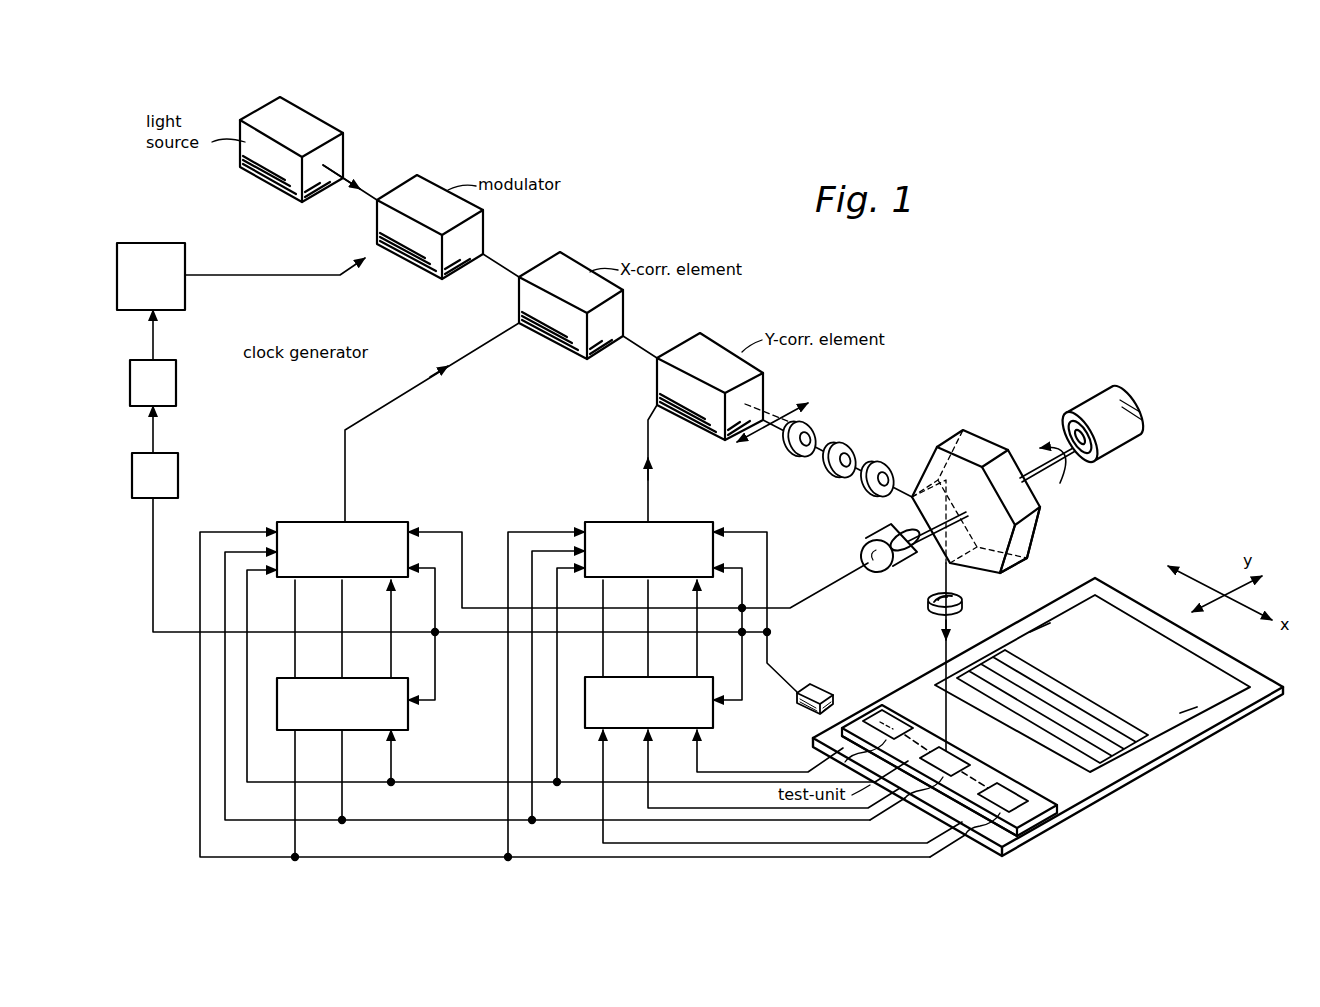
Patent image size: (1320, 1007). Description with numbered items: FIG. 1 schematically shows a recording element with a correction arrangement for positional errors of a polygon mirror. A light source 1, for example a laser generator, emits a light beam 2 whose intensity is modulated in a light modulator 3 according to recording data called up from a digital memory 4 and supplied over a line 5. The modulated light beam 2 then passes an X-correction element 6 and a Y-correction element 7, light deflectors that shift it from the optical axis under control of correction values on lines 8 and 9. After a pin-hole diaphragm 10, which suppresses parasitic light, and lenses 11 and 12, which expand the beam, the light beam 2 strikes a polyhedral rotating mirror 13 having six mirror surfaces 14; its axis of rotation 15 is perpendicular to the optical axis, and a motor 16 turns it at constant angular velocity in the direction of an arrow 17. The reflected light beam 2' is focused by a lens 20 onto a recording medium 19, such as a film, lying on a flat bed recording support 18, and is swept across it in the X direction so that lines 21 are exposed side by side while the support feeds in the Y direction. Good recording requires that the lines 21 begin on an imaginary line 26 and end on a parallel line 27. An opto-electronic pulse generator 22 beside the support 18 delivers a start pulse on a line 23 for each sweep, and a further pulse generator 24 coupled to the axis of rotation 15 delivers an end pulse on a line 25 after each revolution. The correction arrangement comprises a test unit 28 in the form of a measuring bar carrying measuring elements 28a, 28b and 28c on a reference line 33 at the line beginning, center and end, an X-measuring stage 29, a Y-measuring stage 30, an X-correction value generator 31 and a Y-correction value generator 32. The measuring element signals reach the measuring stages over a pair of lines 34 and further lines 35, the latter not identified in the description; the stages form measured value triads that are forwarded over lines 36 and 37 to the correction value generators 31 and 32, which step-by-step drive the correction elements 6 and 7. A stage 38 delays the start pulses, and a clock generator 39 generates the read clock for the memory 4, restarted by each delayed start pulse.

The light source 1 is at (305, 116).
The light beam 2 is at (347, 196).
The reflected light beam 2' is at (923, 662).
The light modulator 3 is at (440, 192).
The digital memory 4 is at (150, 243).
The line 5 is at (250, 275).
The X-correction element 6 is at (570, 268).
The Y-correction element 7 is at (728, 355).
The line 8 is at (400, 400).
The line 9 is at (655, 500).
The pin-hole diaphragm 10 is at (815, 425).
The lens 11 is at (853, 446).
The lens 12 is at (888, 464).
The polyhedral rotating mirror 13 is at (1042, 490).
The mirror surfaces 14 is at (1035, 547).
The axis of rotation 15 is at (877, 544).
The motor 16 is at (1125, 450).
The arrow 17 is at (1038, 440).
The flat bed recording support 18 is at (1105, 587).
The recording medium 19 is at (1132, 635).
The lens 20 is at (966, 600).
The lines 21 is at (1062, 700).
The opto-electronic pulse generator 22 is at (815, 684).
The line 23 is at (777, 672).
The pulse generator 24 is at (858, 545).
The line 25 is at (820, 593).
The imaginary line 26 is at (1038, 638).
The line 27 is at (1172, 722).
The test unit 28 is at (960, 762).
The measuring element 28a is at (881, 710).
The measuring element 28b is at (960, 762).
The measuring element 28c is at (1020, 796).
The X-measuring stage 29 is at (412, 722).
The Y-measuring stage 30 is at (598, 722).
The X-correction value generator 31 is at (308, 522).
The Y-correction value generator 32 is at (602, 522).
The reference line 33 is at (926, 817).
The lines 34 is at (605, 748).
The detector signal lines 35 is at (247, 736).
The lines 36 is at (345, 604).
The lines 37 is at (640, 605).
The stage 38 is at (178, 474).
The clock generator 39 is at (175, 384).